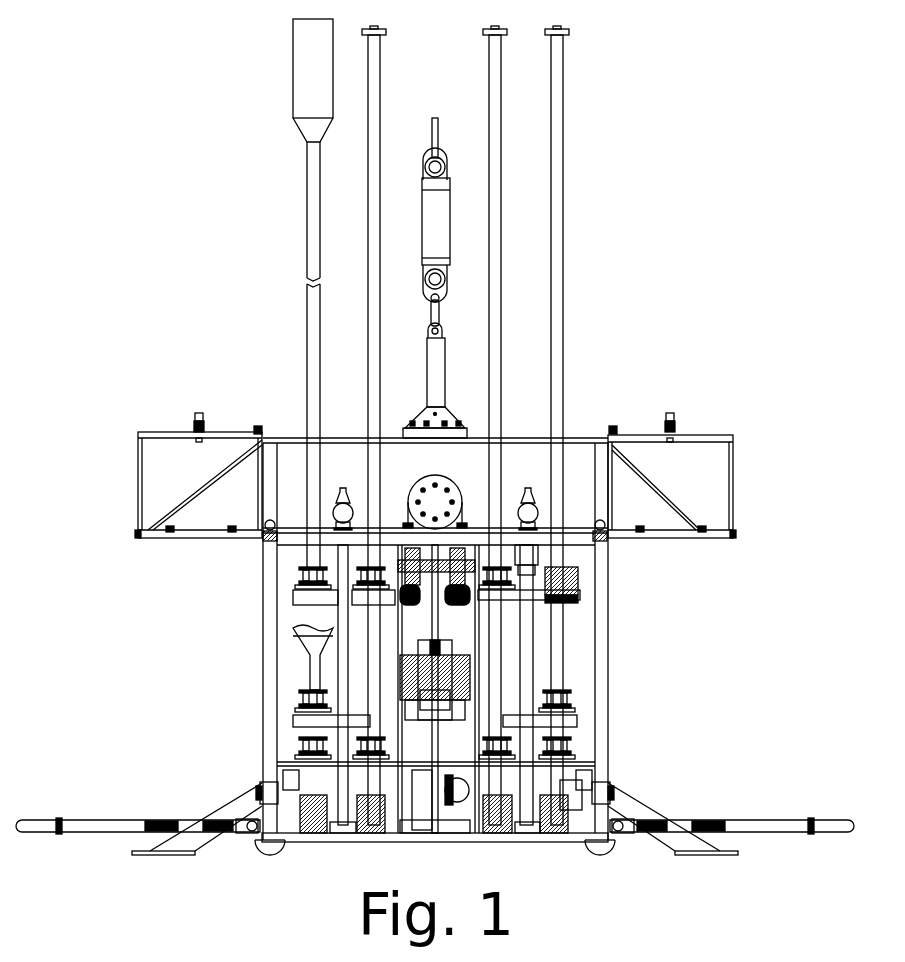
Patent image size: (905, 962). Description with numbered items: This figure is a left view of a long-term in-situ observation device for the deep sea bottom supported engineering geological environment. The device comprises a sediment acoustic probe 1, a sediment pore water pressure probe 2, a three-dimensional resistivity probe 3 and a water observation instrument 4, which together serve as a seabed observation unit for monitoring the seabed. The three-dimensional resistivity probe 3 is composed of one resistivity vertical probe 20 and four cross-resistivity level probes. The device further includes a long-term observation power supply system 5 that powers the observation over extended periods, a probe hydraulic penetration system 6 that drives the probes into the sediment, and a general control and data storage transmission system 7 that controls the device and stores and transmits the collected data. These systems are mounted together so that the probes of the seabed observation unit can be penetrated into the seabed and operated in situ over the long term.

The sediment acoustic probe 1 is at (380, 330).
The sediment pore water pressure probe 2 is at (557, 320).
The three-dimensional resistivity probe 3 is at (843, 820).
The water observation instrument 4 is at (350, 495).
The long-term observation power supply system 5 is at (467, 497).
The probe hydraulic penetration system 6 is at (577, 603).
The general control and data storage transmission system 7 is at (435, 278).
The resistivity vertical probe 20 is at (305, 221).